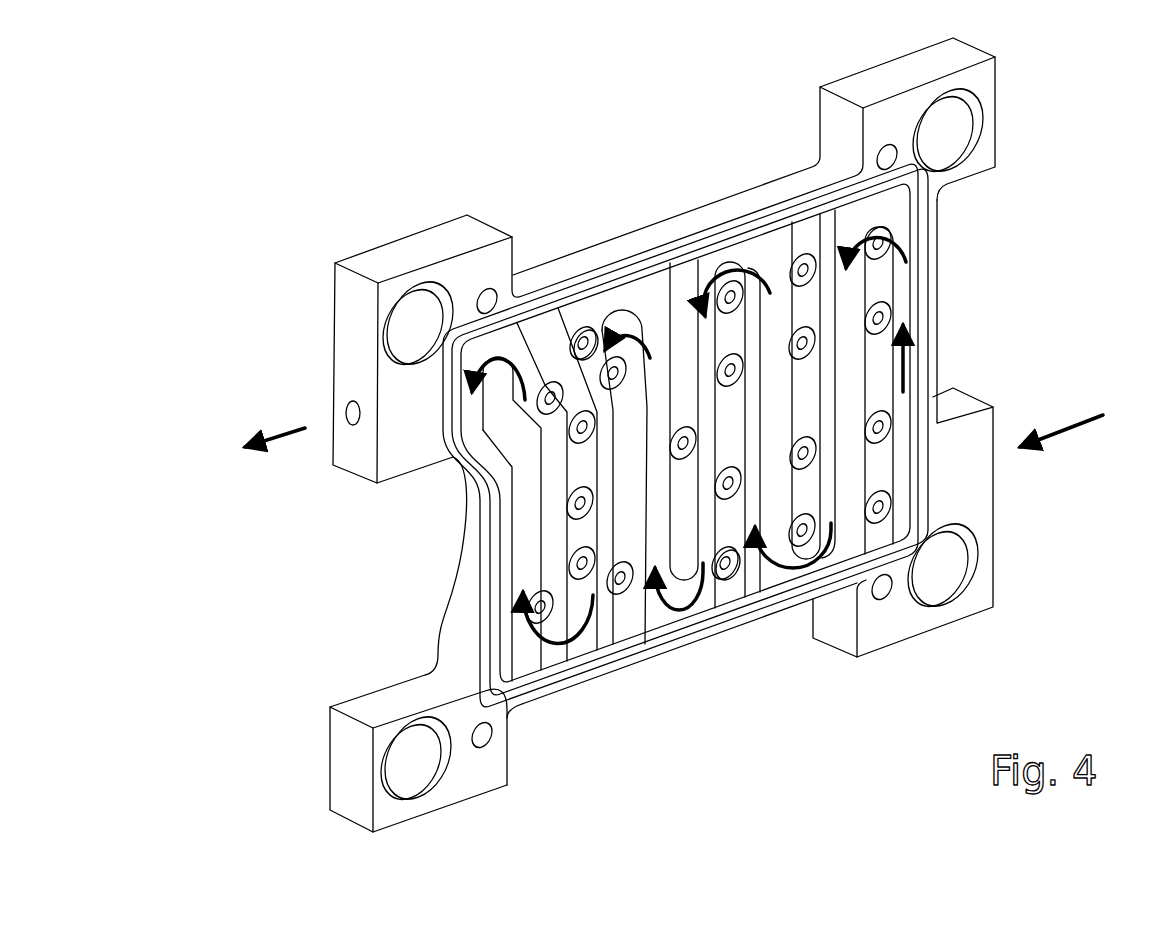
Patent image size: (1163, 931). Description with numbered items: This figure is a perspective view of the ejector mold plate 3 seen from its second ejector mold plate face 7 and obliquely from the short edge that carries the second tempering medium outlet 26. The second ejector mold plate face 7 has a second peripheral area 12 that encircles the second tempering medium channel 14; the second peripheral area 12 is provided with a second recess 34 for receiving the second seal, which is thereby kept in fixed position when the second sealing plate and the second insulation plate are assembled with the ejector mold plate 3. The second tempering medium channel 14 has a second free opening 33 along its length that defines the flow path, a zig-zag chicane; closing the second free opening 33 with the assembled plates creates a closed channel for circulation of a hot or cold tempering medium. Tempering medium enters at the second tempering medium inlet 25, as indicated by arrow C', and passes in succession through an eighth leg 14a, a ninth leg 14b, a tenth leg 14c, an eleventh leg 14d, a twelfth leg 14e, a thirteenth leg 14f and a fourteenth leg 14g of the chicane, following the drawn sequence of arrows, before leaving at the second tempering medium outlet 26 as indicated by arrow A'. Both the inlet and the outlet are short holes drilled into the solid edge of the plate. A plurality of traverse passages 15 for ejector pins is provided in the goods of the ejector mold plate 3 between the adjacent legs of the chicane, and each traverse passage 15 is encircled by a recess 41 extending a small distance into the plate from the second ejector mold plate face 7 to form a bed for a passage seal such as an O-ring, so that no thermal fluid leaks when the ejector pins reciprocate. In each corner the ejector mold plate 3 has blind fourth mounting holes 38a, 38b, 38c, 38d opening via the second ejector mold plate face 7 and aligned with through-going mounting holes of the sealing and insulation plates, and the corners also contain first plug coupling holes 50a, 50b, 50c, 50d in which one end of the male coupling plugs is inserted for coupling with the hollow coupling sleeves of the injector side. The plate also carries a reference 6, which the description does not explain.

The ejector mold plate 3 is at (666, 454).
The plate body 6 is at (636, 225).
The second ejector mold plate face 7 is at (697, 243).
The second peripheral area 12 is at (836, 640).
The second tempering medium channel 14 is at (754, 437).
The eighth leg 14a is at (907, 270).
The ninth leg 14b is at (826, 434).
The tenth leg 14c is at (751, 564).
The eleventh leg 14d is at (722, 252).
The twelfth leg 14e is at (649, 599).
The thirteenth leg 14f is at (608, 484).
The fourteenth leg 14g is at (528, 438).
The traverse passage 15 is at (724, 575).
The second tempering medium inlet 25 is at (957, 450).
The second tempering medium outlet 26 is at (346, 412).
The second free opening 33 is at (517, 647).
The second recess 34 is at (521, 694).
The fourth mounting hole 38a is at (487, 290).
The fourth mounting hole 38b is at (887, 146).
The fourth mounting hole 38c is at (884, 598).
The fourth mounting hole 38d is at (483, 748).
The recess 41 is at (583, 330).
The first plug coupling hole 50a is at (420, 320).
The first plug coupling hole 50b is at (957, 122).
The first plug coupling hole 50c is at (948, 574).
The first plug coupling hole 50d is at (418, 772).